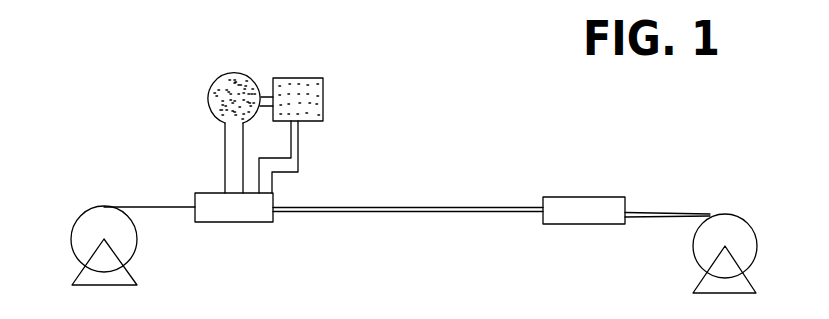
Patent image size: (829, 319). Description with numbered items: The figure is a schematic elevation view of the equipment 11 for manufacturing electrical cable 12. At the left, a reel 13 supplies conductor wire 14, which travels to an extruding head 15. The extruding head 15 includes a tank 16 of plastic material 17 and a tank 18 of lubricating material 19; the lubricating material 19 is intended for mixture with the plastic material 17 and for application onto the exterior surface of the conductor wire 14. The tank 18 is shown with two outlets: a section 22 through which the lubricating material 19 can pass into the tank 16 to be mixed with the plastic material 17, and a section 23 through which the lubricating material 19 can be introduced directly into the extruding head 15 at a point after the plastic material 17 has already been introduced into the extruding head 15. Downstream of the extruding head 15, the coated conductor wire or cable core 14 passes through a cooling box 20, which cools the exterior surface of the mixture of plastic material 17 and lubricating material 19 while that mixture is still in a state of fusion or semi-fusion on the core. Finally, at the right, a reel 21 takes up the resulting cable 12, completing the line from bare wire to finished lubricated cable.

The equipment 11 is at (454, 92).
The electrical cable 12 is at (488, 207).
The reel 13 is at (93, 227).
The conductor wire 14 is at (147, 202).
The extruding head 15 is at (217, 210).
The tank of plastic material 16 is at (208, 112).
The plastic material 17 is at (233, 95).
The tank of lubricating material 18 is at (297, 78).
The lubricating material 19 is at (315, 97).
The cooling box 20 is at (557, 207).
The reel 21 is at (743, 230).
The section 22 is at (266, 97).
The section 23 is at (287, 173).